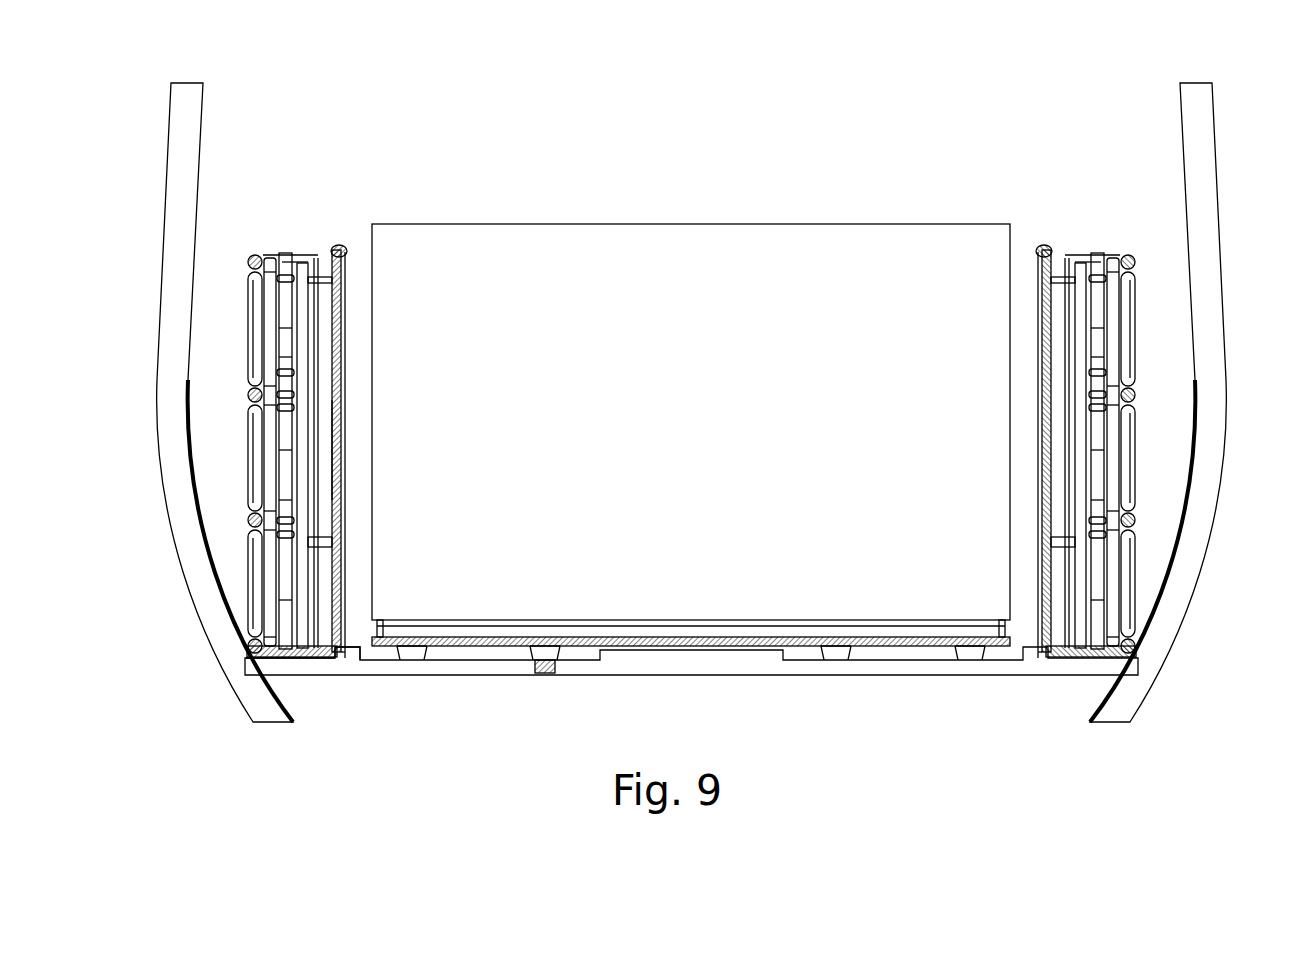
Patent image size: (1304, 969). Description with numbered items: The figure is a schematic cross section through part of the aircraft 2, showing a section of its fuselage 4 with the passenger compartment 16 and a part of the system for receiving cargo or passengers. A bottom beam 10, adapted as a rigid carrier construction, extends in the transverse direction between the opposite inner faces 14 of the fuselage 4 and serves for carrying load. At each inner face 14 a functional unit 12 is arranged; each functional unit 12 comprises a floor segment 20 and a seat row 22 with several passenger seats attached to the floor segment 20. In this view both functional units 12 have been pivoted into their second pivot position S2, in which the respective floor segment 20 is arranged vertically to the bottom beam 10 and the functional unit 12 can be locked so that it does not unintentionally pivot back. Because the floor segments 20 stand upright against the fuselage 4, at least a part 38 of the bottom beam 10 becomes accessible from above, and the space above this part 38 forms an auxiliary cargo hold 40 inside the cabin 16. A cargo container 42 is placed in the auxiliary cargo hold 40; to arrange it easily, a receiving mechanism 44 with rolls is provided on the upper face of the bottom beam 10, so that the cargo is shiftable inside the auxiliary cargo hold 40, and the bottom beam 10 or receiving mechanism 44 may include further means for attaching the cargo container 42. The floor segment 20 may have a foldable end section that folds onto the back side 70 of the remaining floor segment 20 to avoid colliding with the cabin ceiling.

The aircraft 2 is at (722, 361).
The fuselage 4 is at (1207, 157).
The inner face of the fuselage 14 is at (201, 168).
The functional unit 12 is at (292, 407).
The seat row 22 is at (236, 287).
The floor segment 20 is at (343, 363).
The back side of the floor segment 70 is at (343, 444).
The passenger compartment 16 is at (872, 194).
The auxiliary cargo hold 40 is at (722, 194).
The cargo container 42 is at (806, 382).
The part of the bottom beam 38 is at (352, 636).
The receiving mechanism 44 is at (537, 675).
The bottom beam 10 is at (648, 667).
The second pivot position S2 is at (1094, 209).